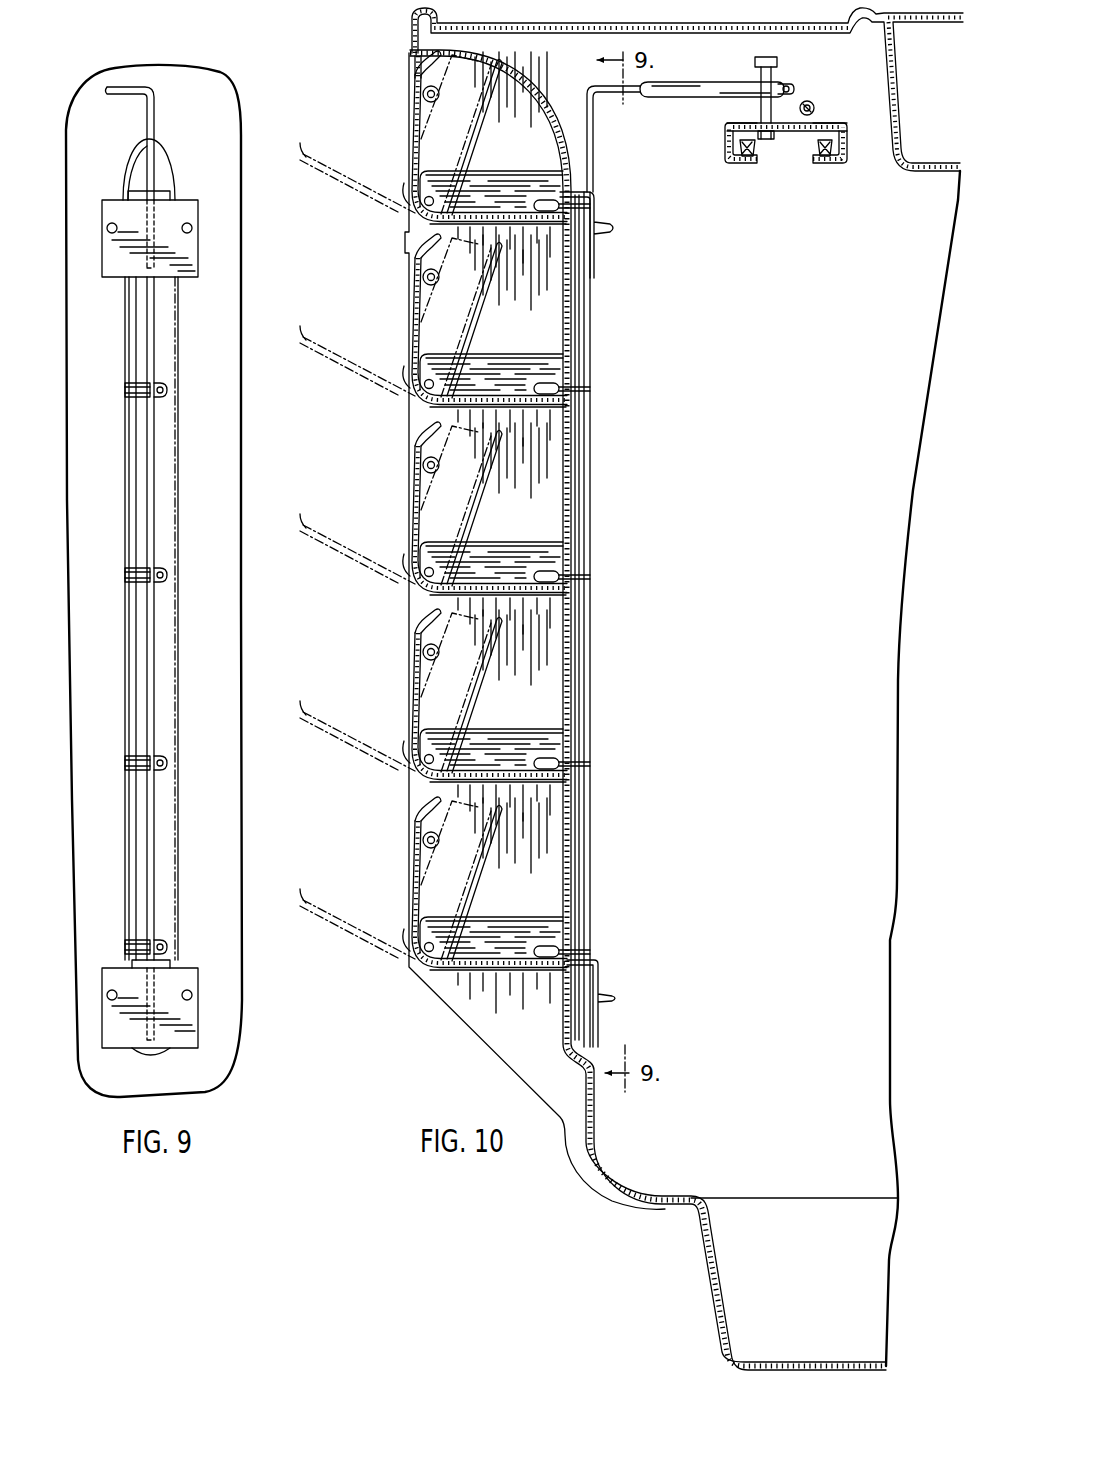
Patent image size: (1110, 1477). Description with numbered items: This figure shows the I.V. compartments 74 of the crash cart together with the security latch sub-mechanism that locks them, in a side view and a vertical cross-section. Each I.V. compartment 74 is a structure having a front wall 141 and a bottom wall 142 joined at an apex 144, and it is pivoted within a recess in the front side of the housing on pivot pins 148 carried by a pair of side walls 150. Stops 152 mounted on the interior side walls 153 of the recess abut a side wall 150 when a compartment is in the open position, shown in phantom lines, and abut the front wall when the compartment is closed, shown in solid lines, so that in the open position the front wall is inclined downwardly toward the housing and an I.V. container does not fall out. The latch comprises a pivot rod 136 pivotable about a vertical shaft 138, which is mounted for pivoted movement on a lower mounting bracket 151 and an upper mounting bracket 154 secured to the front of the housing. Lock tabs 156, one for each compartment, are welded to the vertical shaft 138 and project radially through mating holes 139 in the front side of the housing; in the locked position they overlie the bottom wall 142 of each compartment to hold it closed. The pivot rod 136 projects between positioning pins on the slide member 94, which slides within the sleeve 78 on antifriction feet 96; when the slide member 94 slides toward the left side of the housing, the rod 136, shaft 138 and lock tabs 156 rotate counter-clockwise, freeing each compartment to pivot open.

In FIG. 10, the I.V. compartment 74 is at (383, 135).
In FIG. 10, the sleeve 78 is at (850, 145).
In FIG. 10, the slide member 94 is at (792, 133).
In FIG. 10, the antifriction feet 96 is at (757, 165).
In FIG. 9, the pivot rod 136 is at (120, 86).
In FIG. 10, the pivot rod 136 is at (617, 94).
In FIG. 9, the vertical shaft 138 is at (153, 475).
In FIG. 10, the vertical shaft 138 is at (592, 347).
In FIG. 9, the mating holes 139 is at (162, 565).
In FIG. 10, the mating holes 139 is at (574, 756).
In FIG. 10, the front wall 141 is at (416, 292).
In FIG. 10, the bottom wall 142 is at (521, 235).
In FIG. 10, the apex 144 is at (409, 416).
In FIG. 10, the pivot pins 148 is at (425, 201).
In FIG. 10, the side walls 150 is at (488, 187).
In FIG. 9, the lower mounting bracket 151 is at (178, 980).
In FIG. 10, the stops 152 is at (428, 94).
In FIG. 10, the interior side walls 153 is at (421, 602).
In FIG. 9, the upper mounting bracket 154 is at (188, 255).
In FIG. 9, the lock tabs 156 is at (127, 393).
In FIG. 10, the lock tabs 156 is at (562, 198).